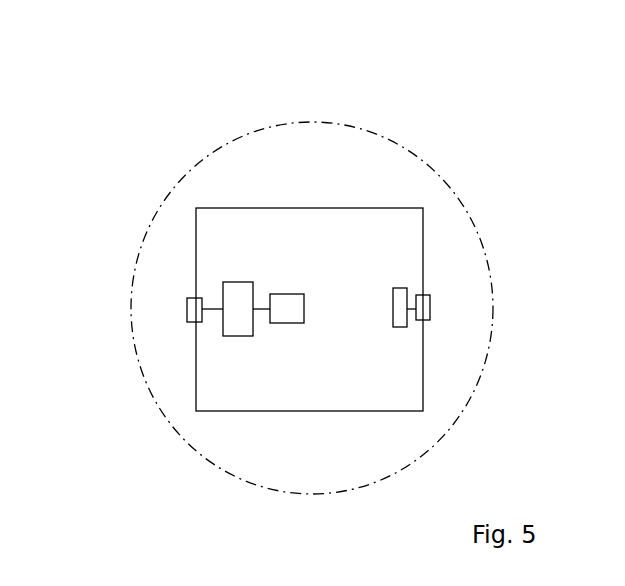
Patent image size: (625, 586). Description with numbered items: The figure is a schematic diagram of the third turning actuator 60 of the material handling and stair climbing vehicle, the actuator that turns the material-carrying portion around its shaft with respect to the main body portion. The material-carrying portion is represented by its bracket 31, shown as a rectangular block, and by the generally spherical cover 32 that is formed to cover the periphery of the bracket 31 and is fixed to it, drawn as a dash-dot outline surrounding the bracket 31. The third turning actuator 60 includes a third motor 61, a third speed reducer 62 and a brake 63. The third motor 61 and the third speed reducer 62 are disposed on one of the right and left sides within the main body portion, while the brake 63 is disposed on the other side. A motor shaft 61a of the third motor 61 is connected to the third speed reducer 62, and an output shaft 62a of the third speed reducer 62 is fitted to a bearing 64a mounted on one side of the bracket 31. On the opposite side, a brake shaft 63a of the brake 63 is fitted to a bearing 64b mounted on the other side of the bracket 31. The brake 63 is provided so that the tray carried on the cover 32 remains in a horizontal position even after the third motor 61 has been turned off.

The third turning actuator 60 is at (402, 106).
The bracket 31 is at (423, 362).
The cover 32 is at (128, 327).
The third motor 61 is at (291, 294).
The motor shaft 61a is at (259, 308).
The third speed reducer 62 is at (228, 282).
The output shaft 62a is at (213, 308).
The brake 63 is at (398, 288).
The brake shaft 63a is at (419, 295).
The bearing 64a is at (188, 298).
The bearing 64b is at (428, 295).